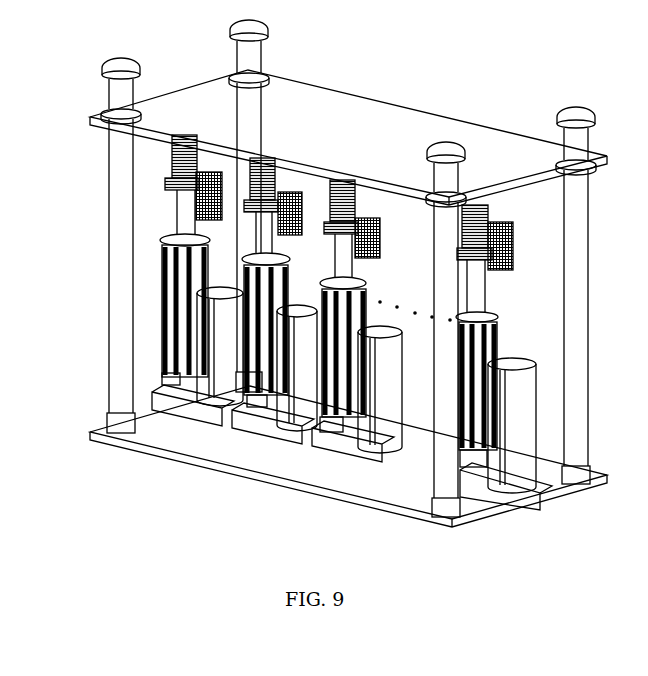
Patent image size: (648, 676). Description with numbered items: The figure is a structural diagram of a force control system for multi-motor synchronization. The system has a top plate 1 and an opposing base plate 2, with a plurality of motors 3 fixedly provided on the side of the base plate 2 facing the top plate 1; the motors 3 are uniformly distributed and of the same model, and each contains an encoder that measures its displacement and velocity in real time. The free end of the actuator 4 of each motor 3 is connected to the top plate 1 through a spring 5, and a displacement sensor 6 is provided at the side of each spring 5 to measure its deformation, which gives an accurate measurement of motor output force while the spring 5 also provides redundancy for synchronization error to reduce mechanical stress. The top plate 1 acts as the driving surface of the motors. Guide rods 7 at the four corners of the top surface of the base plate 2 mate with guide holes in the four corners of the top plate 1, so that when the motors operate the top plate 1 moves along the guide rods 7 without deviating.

The top plate 1 is at (343, 134).
The base plate 2 is at (260, 462).
The motor 3 is at (507, 437).
The actuator 4 is at (487, 343).
The spring 5 is at (180, 150).
The displacement sensor 6 is at (503, 245).
The guide rod 7 is at (117, 248).